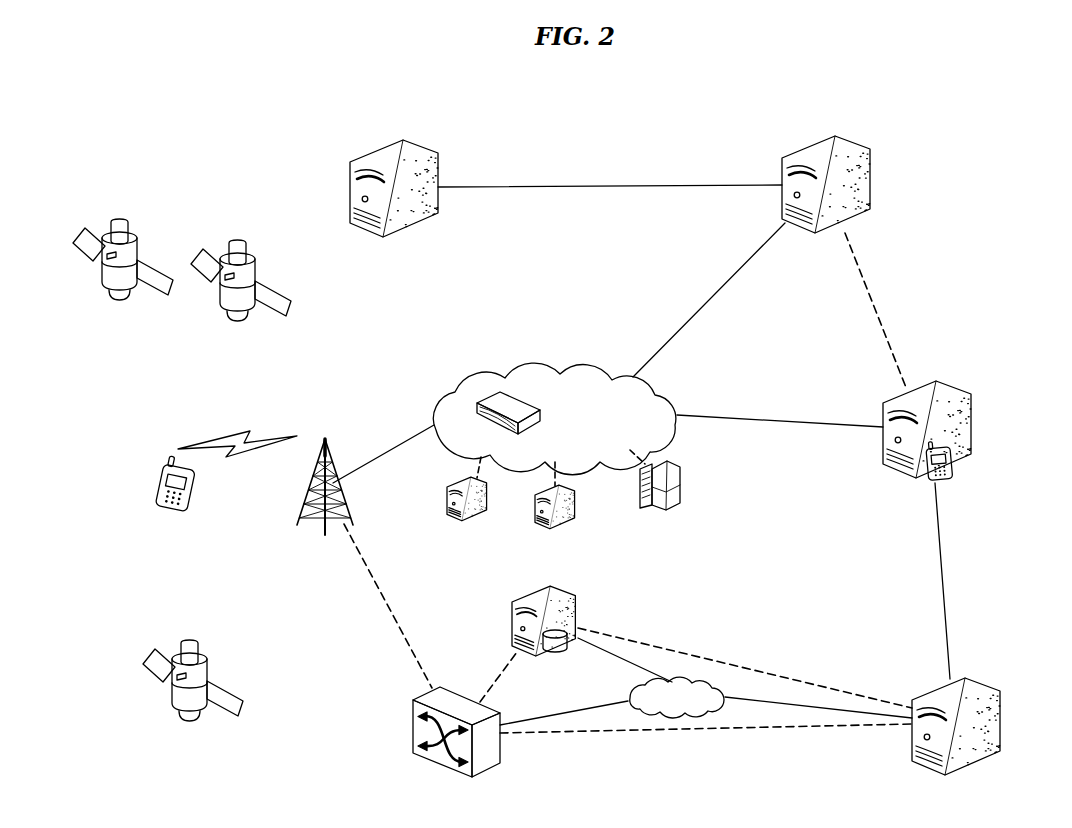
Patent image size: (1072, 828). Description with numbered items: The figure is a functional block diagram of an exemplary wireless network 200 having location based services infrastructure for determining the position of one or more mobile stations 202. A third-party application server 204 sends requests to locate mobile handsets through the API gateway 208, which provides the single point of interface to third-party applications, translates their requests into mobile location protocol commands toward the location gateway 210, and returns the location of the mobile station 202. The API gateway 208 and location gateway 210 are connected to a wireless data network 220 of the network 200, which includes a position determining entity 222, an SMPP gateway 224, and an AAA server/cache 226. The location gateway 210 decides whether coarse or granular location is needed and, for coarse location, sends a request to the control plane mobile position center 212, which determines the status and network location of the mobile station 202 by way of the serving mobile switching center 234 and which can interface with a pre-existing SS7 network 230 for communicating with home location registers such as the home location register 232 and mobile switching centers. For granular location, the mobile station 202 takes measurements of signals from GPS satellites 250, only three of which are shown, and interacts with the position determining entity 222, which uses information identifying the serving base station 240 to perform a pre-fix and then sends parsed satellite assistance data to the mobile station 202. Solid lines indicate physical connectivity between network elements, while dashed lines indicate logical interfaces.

The network 200 is at (141, 104).
The mobile station 202 is at (162, 502).
The application server 204 is at (357, 158).
The API gateway 208 is at (872, 167).
The location gateway 210 is at (948, 385).
The mobile position center 212 is at (990, 683).
The wireless data network 220 is at (554, 419).
The position determining entity 222 is at (452, 513).
The SMPP gateway 224 is at (560, 520).
The AAA server/cache 226 is at (667, 507).
The SS7 network 230 is at (677, 697).
The home location register 232 is at (577, 613).
The serving mobile switching center 234 is at (412, 737).
The base station 240 is at (334, 480).
The GPS satellites 250 is at (100, 283).